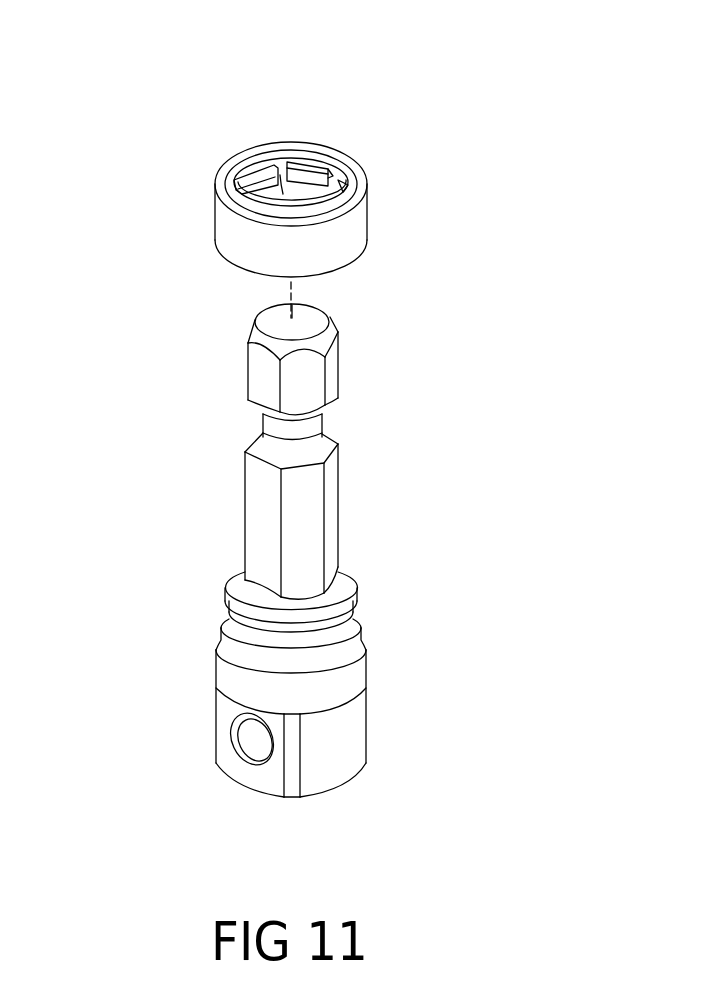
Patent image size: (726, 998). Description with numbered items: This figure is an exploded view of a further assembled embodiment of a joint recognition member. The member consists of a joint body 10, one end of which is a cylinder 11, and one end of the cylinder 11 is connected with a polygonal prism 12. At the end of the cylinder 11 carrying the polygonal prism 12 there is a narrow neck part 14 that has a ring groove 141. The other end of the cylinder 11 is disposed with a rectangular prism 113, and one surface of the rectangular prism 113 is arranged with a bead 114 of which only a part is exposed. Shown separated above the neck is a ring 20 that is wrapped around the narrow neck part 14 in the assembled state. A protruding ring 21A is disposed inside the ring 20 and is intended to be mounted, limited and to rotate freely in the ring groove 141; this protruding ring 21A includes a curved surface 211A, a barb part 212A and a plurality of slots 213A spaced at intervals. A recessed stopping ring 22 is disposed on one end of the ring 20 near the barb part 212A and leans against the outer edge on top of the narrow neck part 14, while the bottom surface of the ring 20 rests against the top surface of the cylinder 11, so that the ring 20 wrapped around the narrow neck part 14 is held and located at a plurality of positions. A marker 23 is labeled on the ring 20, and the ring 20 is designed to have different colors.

The joint body 10 is at (180, 543).
The cylinder 11 is at (313, 715).
The rectangular prism 113 is at (278, 738).
The bead 114 is at (250, 738).
The polygonal prism 12 is at (310, 497).
The narrow neck part 14 is at (216, 616).
The ring groove 141 is at (258, 630).
The ring 20 is at (262, 159).
The protruding ring 21A is at (250, 167).
The curved surface 211A is at (313, 173).
The barb part 212A is at (293, 163).
The slots 213A is at (256, 200).
The recessed stopping ring 22 is at (355, 175).
The marker 23 is at (227, 245).